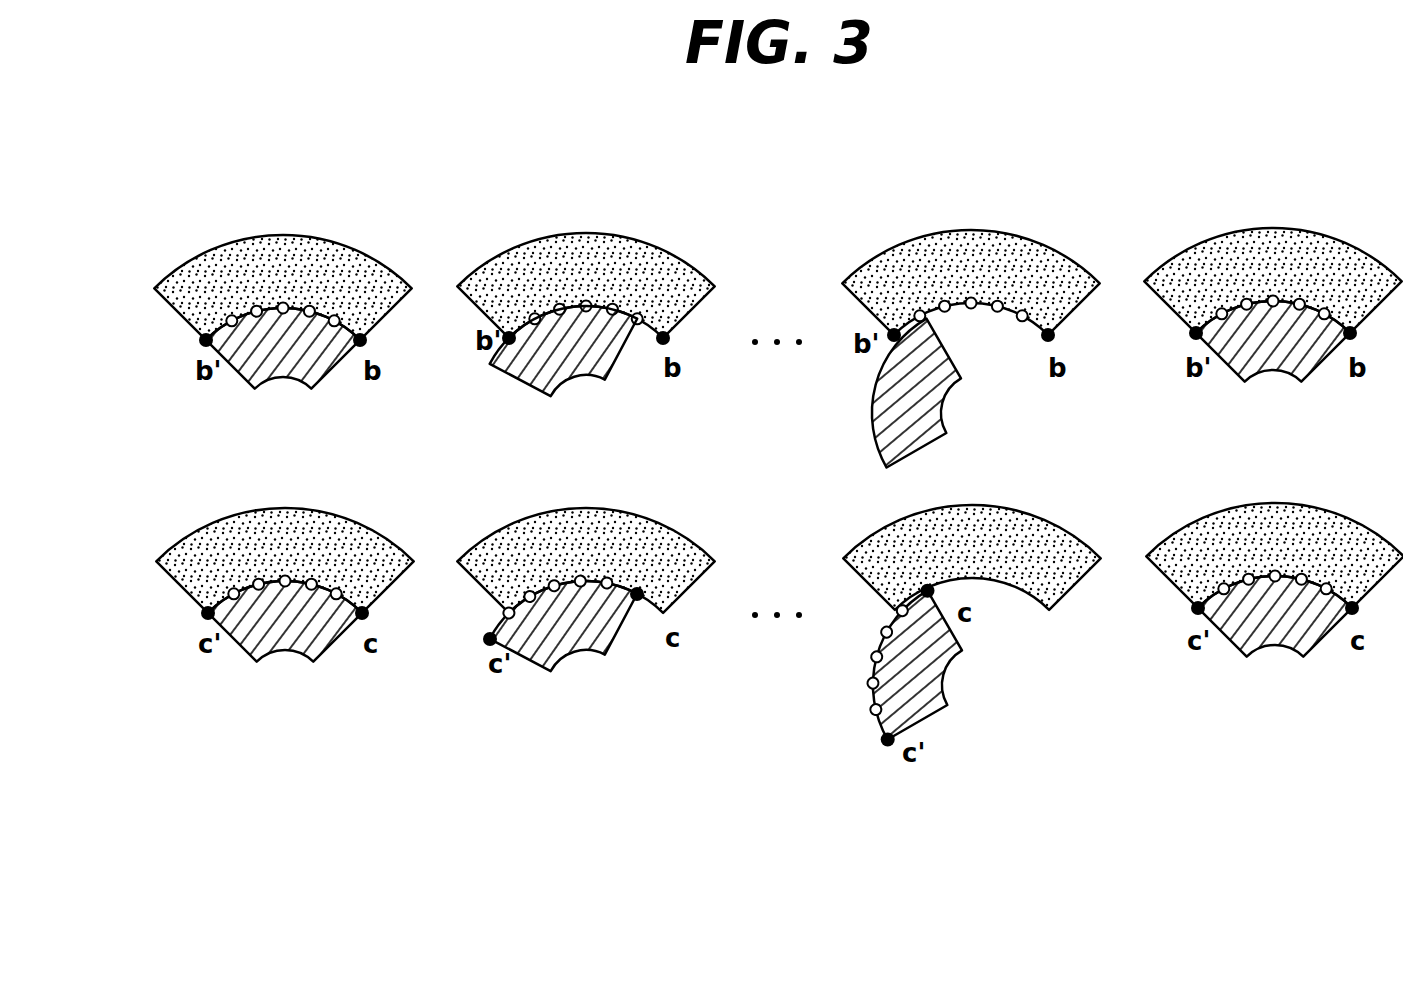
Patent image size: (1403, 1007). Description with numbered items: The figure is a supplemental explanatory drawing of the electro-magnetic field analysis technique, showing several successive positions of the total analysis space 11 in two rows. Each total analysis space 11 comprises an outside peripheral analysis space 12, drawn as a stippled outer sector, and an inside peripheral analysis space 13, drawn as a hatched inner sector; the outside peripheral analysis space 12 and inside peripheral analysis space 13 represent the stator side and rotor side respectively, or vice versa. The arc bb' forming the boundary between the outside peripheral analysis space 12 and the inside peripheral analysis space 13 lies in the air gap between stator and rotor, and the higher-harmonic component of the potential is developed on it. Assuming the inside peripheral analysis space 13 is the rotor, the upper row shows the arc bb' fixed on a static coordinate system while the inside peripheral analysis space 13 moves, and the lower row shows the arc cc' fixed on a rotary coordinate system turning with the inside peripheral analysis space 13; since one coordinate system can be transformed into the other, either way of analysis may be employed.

The total analysis space 11 is at (561, 427).
The outside peripheral analysis space 12 is at (587, 232).
The inside peripheral analysis space 13 is at (614, 368).